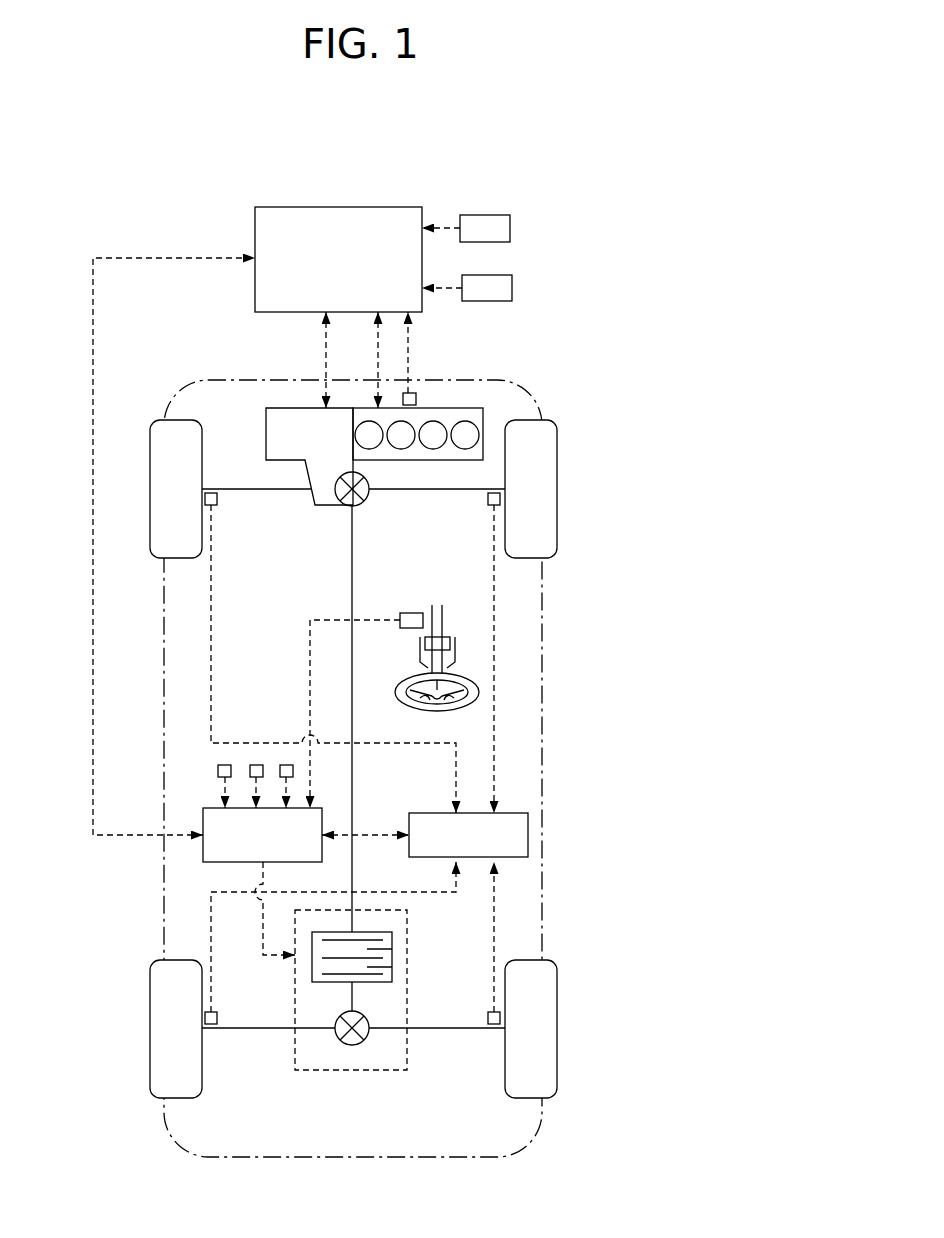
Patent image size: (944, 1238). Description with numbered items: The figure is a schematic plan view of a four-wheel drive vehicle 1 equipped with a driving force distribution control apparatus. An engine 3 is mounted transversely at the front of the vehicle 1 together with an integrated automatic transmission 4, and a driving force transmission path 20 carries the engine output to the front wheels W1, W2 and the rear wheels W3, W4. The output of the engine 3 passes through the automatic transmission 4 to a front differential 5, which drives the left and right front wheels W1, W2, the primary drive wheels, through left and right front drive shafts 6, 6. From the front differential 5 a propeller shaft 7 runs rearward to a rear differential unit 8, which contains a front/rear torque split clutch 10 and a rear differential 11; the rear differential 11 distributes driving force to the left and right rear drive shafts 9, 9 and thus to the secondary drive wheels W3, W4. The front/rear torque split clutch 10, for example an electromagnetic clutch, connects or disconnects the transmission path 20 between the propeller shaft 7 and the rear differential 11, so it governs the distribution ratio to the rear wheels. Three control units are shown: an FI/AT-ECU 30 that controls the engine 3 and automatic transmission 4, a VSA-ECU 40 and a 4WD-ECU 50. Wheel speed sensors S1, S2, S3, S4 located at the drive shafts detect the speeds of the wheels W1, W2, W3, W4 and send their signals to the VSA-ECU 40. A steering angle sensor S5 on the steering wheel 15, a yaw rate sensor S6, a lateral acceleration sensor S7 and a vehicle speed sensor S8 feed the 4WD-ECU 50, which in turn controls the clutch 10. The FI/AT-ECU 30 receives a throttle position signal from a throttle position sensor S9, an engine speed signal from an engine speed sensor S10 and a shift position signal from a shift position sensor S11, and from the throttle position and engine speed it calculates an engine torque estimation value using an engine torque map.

The four-wheel drive vehicle 1 is at (558, 380).
The engine 3 is at (472, 408).
The automatic transmission 4 is at (283, 408).
The front differential 5 is at (358, 505).
The front drive shaft 6 is at (292, 490).
The propeller shaft 7 is at (355, 732).
The rear differential unit 8 is at (295, 990).
The rear drive shaft 9 is at (258, 1030).
The front/rear torque split clutch 10 is at (383, 932).
The rear differential 11 is at (358, 1042).
The steering wheel 15 is at (475, 678).
The driving force transmission path 20 is at (268, 626).
The FI/AT-ECU 30 is at (367, 206).
The VSA-ECU 40 is at (508, 813).
The 4WD-ECU 50 is at (203, 812).
The left front wheel speed sensor S1 is at (213, 505).
The right front wheel speed sensor S2 is at (493, 505).
The left rear wheel speed sensor S3 is at (213, 1030).
The right rear wheel speed sensor S4 is at (493, 1030).
The steering angle sensor S5 is at (415, 613).
The yaw rate sensor S6 is at (286, 765).
The lateral acceleration sensor S7 is at (256, 765).
The vehicle speed sensor S8 is at (218, 771).
The throttle position sensor S9 is at (510, 228).
The engine speed sensor S10 is at (417, 398).
The shift position sensor S11 is at (512, 288).
The left front wheel W1 is at (160, 420).
The right front wheel W2 is at (552, 420).
The left rear wheel W3 is at (160, 960).
The right rear wheel W4 is at (548, 960).